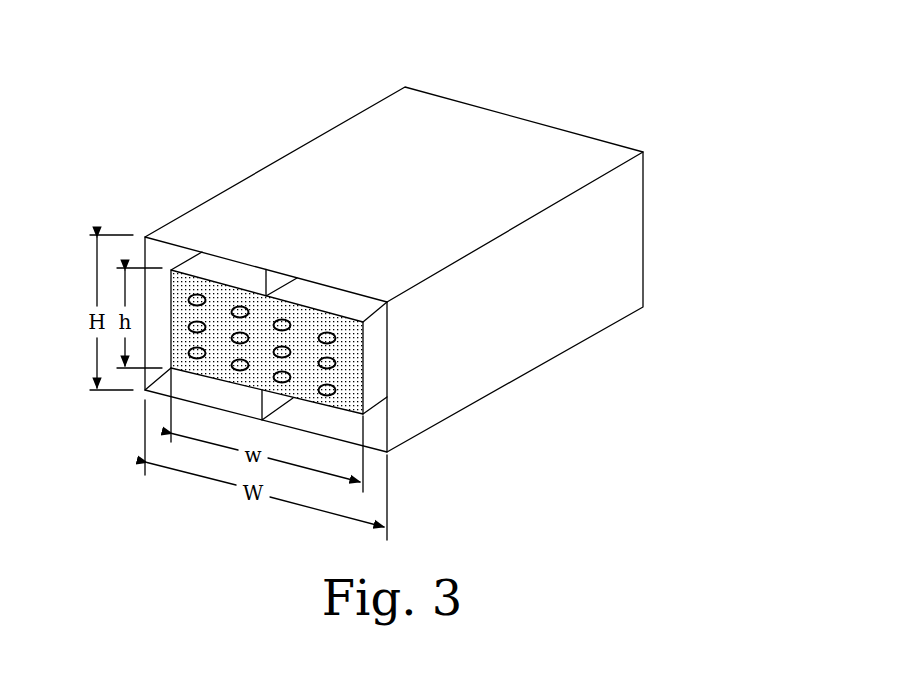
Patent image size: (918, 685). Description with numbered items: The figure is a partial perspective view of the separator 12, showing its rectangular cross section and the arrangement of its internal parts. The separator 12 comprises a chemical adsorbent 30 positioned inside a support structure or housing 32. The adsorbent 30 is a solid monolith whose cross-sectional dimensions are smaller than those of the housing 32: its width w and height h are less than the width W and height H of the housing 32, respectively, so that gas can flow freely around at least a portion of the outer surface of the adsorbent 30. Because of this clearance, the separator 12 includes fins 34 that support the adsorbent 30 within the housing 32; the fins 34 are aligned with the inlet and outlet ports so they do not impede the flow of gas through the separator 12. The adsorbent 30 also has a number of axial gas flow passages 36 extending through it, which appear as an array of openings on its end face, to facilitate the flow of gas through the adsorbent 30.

The separator 12 is at (411, 236).
The chemical adsorbent 30 is at (229, 278).
The housing 32 is at (567, 138).
The fins 34 is at (265, 294).
The axial gas flow passages 36 is at (340, 362).